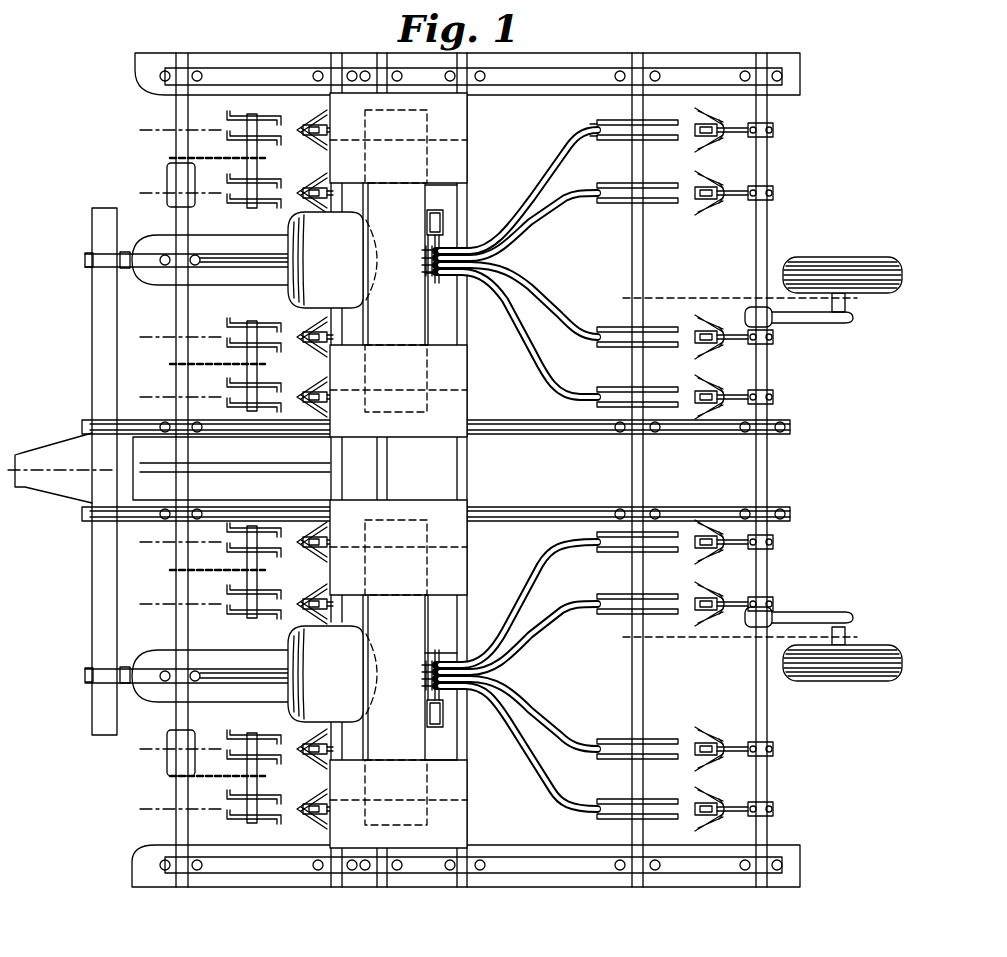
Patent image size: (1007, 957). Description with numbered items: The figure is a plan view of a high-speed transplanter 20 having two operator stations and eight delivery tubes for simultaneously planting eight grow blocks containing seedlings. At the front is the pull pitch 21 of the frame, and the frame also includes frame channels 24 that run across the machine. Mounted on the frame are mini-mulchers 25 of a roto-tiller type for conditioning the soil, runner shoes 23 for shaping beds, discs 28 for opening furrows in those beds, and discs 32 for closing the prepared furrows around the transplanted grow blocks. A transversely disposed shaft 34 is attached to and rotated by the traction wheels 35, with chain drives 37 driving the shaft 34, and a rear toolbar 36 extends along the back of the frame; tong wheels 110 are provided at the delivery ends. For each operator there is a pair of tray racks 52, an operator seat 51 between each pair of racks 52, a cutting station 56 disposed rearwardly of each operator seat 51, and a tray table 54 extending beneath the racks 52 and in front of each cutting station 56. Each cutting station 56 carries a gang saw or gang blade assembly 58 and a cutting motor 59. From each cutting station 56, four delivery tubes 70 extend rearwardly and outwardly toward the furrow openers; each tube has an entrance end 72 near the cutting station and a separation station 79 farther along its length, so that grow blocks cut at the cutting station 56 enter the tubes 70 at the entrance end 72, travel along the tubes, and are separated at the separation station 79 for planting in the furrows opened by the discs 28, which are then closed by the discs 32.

The air seeder implement 20 is at (85, 228).
The pull pitch 21 is at (50, 453).
The runner shoes 23 is at (153, 85).
The frame channels 24 is at (537, 507).
The mini-mulchers 25 is at (235, 324).
The discs 28 is at (314, 148).
The discs 32 is at (716, 191).
The transversely disposed shaft 34 is at (643, 248).
The traction wheels 35 is at (877, 258).
The rear toolbar 36 is at (768, 470).
The chain drives 37 is at (685, 298).
The operator seat 51 is at (347, 273).
The tray racks 52 is at (462, 128).
The tray table 54 is at (412, 338).
The cutting station 56 is at (420, 261).
The gang saw or gang blade assembly 58 is at (425, 250).
The cutting motor 59 is at (448, 218).
The delivery tubes 70 is at (545, 168).
The entrance end 72 is at (457, 702).
The separation station 79 is at (603, 336).
The tong wheels 110 is at (610, 186).